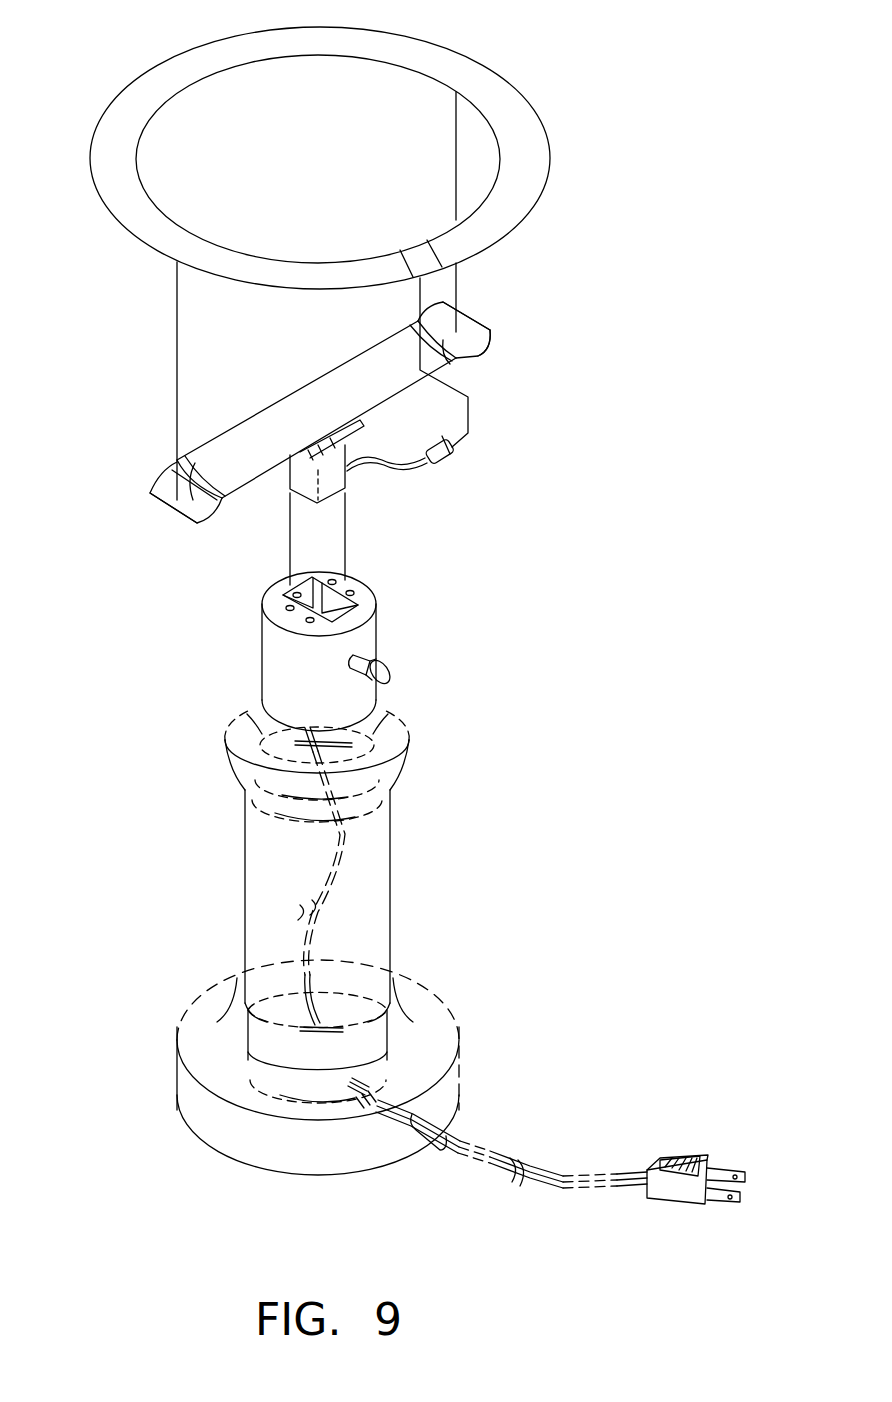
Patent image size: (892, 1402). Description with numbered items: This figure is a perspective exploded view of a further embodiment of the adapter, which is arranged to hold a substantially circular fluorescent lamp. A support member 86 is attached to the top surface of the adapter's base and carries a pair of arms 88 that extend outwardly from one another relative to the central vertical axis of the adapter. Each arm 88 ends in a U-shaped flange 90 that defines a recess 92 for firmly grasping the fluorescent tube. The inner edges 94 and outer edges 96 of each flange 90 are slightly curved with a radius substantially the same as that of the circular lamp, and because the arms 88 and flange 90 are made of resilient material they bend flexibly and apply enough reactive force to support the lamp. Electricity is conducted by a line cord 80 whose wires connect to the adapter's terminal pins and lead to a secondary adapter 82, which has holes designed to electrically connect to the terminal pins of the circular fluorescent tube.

The line cord 80 is at (385, 467).
The secondary adapter 82 is at (445, 467).
The support member 86 is at (297, 417).
The arms 88 is at (253, 417).
The U-shaped flange 90 is at (180, 513).
The recess 92 is at (168, 492).
The inner edges of the flange 94 is at (190, 473).
The outer edges of the flange 96 is at (160, 503).